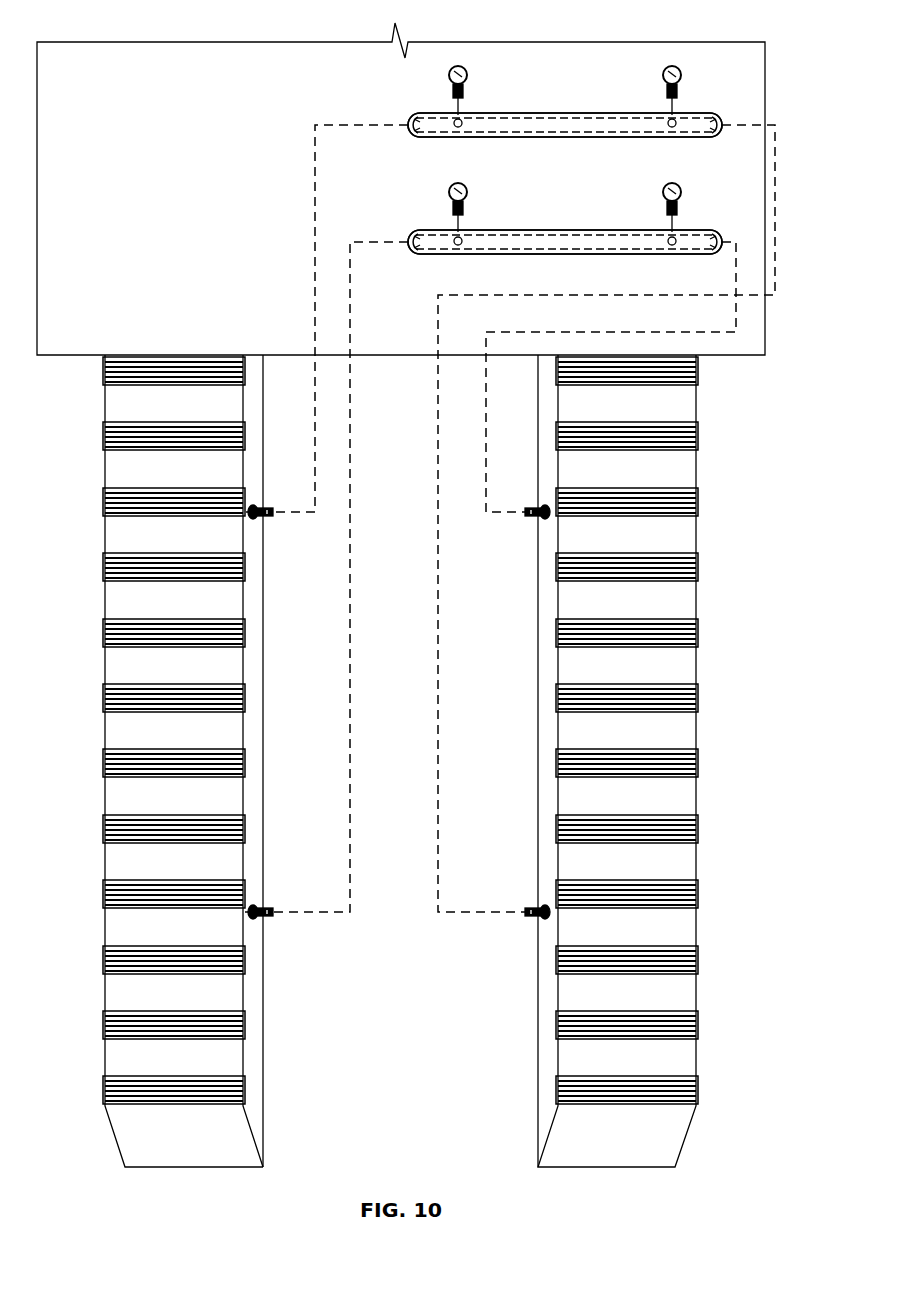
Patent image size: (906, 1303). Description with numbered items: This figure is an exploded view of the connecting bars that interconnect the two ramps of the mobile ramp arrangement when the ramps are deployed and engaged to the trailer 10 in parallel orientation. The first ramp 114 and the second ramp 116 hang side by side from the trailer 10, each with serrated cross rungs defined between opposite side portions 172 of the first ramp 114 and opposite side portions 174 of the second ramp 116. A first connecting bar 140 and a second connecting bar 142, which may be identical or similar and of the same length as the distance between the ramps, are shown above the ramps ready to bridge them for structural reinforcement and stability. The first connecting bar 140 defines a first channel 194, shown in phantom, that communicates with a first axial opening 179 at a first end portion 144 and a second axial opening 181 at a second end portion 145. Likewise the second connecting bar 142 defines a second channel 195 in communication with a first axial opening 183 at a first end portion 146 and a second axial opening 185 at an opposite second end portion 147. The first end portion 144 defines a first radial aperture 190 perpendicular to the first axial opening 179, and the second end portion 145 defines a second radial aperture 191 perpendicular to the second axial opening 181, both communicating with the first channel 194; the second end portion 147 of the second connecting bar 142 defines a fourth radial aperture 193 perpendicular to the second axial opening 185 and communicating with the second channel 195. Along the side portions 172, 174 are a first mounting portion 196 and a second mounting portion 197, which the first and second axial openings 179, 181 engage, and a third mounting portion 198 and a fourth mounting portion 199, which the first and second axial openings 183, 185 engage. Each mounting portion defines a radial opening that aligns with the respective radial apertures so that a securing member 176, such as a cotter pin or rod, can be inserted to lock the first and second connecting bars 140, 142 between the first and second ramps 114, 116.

The trailer 10 is at (88, 358).
The first ramp 114 is at (105, 725).
The second ramp 116 is at (700, 656).
The side portions of the first ramp 172 is at (250, 611).
The side portions of the second ramp 174 is at (548, 618).
The first connecting bar 140 is at (611, 108).
The second connecting bar 142 is at (611, 225).
The first end portion of the first connecting bar 144 is at (553, 127).
The first end portion of the second connecting bar 146 is at (565, 245).
The second end portion of the first connecting bar 145 is at (648, 129).
The second end portion of the second connecting bar 147 is at (648, 246).
The first channel 194 is at (510, 131).
The securing member 176 is at (465, 70).
The first axial opening of the first connecting bar 179 is at (408, 120).
The second axial opening of the first connecting bar 181 is at (722, 125).
The first axial opening of the second connecting bar 183 is at (408, 238).
The second axial opening of the second connecting bar 185 is at (722, 242).
The first radial aperture 190 is at (463, 121).
The second radial aperture 191 is at (677, 121).
The fourth radial aperture 193 is at (677, 239).
The second channel 195 is at (463, 239).
The first mounting portion 196 is at (260, 507).
The second mounting portion 197 is at (260, 907).
The third mounting portion 198 is at (540, 507).
The fourth mounting portion 199 is at (540, 907).